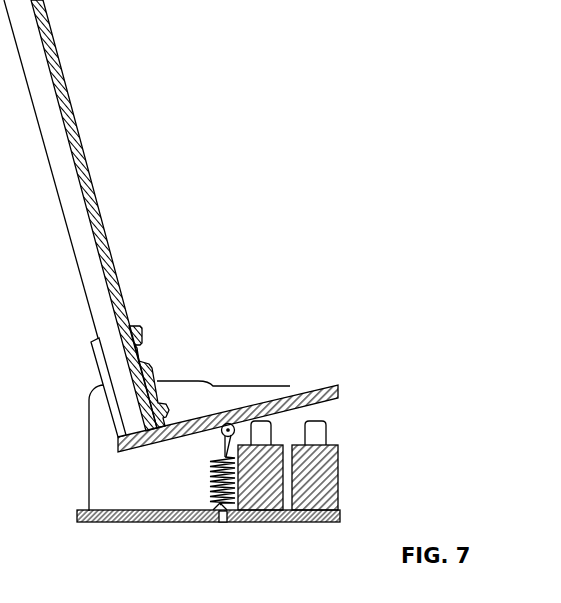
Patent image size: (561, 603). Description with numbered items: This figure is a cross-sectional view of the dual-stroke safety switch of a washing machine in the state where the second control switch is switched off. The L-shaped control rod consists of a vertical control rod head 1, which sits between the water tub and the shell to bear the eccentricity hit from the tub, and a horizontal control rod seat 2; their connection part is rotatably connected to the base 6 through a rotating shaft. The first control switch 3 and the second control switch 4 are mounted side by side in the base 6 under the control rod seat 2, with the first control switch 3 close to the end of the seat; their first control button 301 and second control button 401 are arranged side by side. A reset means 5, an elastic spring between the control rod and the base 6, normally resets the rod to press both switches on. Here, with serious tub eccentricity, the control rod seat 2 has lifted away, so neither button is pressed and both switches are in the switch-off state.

The control rod head 1 is at (98, 218).
The control rod seat 2 is at (259, 378).
The first control switch 3 is at (322, 501).
The first control button 301 is at (351, 407).
The second control switch 4 is at (270, 501).
The second control button 401 is at (324, 391).
The reset means 5 is at (241, 496).
The base 6 is at (208, 534).